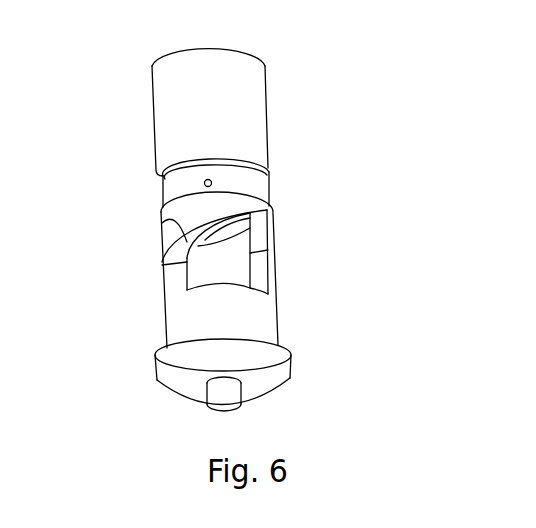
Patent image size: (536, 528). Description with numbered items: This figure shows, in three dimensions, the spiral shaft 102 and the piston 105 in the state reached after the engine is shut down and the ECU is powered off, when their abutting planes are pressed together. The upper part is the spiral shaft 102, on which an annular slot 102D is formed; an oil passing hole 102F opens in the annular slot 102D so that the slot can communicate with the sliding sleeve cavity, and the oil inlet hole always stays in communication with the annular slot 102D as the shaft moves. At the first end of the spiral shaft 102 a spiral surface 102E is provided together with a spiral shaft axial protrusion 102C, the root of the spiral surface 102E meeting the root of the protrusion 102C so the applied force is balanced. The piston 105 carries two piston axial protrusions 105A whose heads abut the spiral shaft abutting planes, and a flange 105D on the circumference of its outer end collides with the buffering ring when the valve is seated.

The spiral shaft 102 is at (287, 97).
The spiral shaft axial protrusion 102C is at (262, 235).
The annular slot 102D is at (253, 176).
The spiral surface 102E is at (172, 220).
The oil passing hole 102F is at (208, 180).
The piston 105 is at (300, 342).
The piston axial protrusion 105A is at (170, 280).
The flange 105D is at (288, 362).